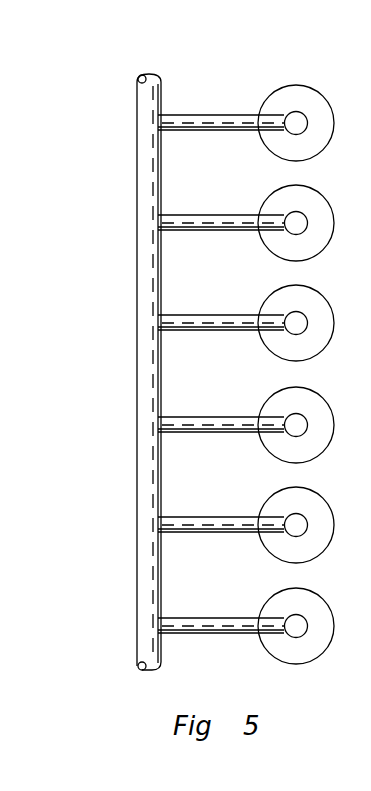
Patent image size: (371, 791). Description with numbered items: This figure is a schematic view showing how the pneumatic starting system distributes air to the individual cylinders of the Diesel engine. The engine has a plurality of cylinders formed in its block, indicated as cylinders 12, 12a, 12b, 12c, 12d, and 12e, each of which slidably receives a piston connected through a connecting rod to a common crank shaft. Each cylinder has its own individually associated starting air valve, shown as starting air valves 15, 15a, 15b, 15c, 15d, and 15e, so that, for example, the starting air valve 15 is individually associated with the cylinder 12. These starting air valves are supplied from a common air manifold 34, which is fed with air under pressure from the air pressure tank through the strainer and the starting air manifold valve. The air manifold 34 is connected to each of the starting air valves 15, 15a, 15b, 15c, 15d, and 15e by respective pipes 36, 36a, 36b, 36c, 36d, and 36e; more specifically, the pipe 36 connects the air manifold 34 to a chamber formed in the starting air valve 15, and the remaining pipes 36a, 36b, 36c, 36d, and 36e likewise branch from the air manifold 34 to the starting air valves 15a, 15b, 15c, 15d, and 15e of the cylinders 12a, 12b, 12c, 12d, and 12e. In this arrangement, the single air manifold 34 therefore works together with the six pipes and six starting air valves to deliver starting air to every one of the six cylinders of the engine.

The air manifold 34 is at (140, 603).
The pipe 36 is at (203, 117).
The pipe 36a is at (203, 217).
The pipe 36b is at (203, 317).
The pipe 36c is at (203, 419).
The pipe 36d is at (203, 519).
The pipe 36e is at (203, 620).
The cylinder 12 is at (316, 107).
The cylinder 12a is at (316, 207).
The cylinder 12b is at (316, 307).
The cylinder 12c is at (316, 409).
The cylinder 12d is at (316, 509).
The cylinder 12e is at (314, 608).
The starting air valve 15 is at (288, 117).
The starting air valve 15a is at (288, 217).
The starting air valve 15b is at (288, 317).
The starting air valve 15c is at (288, 419).
The starting air valve 15d is at (288, 519).
The starting air valve 15e is at (288, 620).